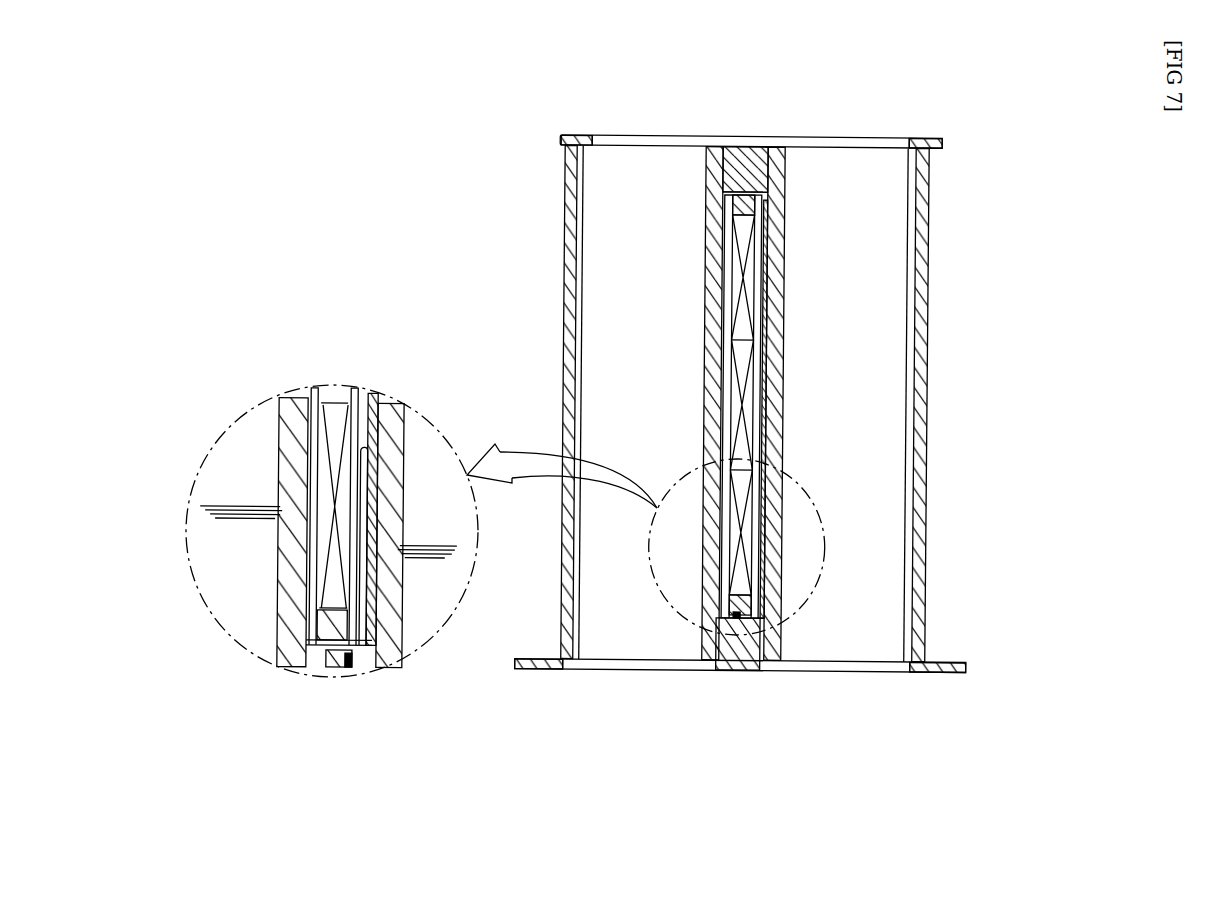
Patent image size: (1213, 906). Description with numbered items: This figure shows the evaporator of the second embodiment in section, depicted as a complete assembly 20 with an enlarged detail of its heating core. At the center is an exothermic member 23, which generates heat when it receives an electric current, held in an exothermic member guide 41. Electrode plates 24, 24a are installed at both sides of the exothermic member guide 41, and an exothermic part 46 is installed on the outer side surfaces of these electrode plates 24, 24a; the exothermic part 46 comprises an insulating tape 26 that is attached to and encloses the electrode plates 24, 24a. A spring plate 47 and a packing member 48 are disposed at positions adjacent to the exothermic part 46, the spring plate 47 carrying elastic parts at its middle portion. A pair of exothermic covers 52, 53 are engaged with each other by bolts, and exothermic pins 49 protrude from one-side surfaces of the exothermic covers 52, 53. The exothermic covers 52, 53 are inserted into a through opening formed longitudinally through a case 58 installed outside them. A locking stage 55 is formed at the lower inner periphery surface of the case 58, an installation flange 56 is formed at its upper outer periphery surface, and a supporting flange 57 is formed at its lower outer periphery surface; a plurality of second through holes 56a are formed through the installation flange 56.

The assembly 20 is at (954, 550).
The exothermic member 23 is at (733, 223).
The electrode plate 24 is at (762, 207).
The electrode plate 24a is at (741, 232).
The insulating tape 26 is at (757, 217).
The exothermic member guide 41 is at (745, 203).
The exothermic part 46 is at (745, 660).
The spring plate 47 is at (777, 233).
The packing member 48 is at (733, 153).
The exothermic pins 49 is at (893, 380).
The exothermic cover 52 is at (763, 657).
The exothermic cover 53 is at (707, 657).
The locking stage 55 is at (907, 178).
The installation flange 56 is at (963, 686).
The second through holes 56a is at (947, 676).
The supporting flange 57 is at (912, 148).
The case 58 is at (924, 497).